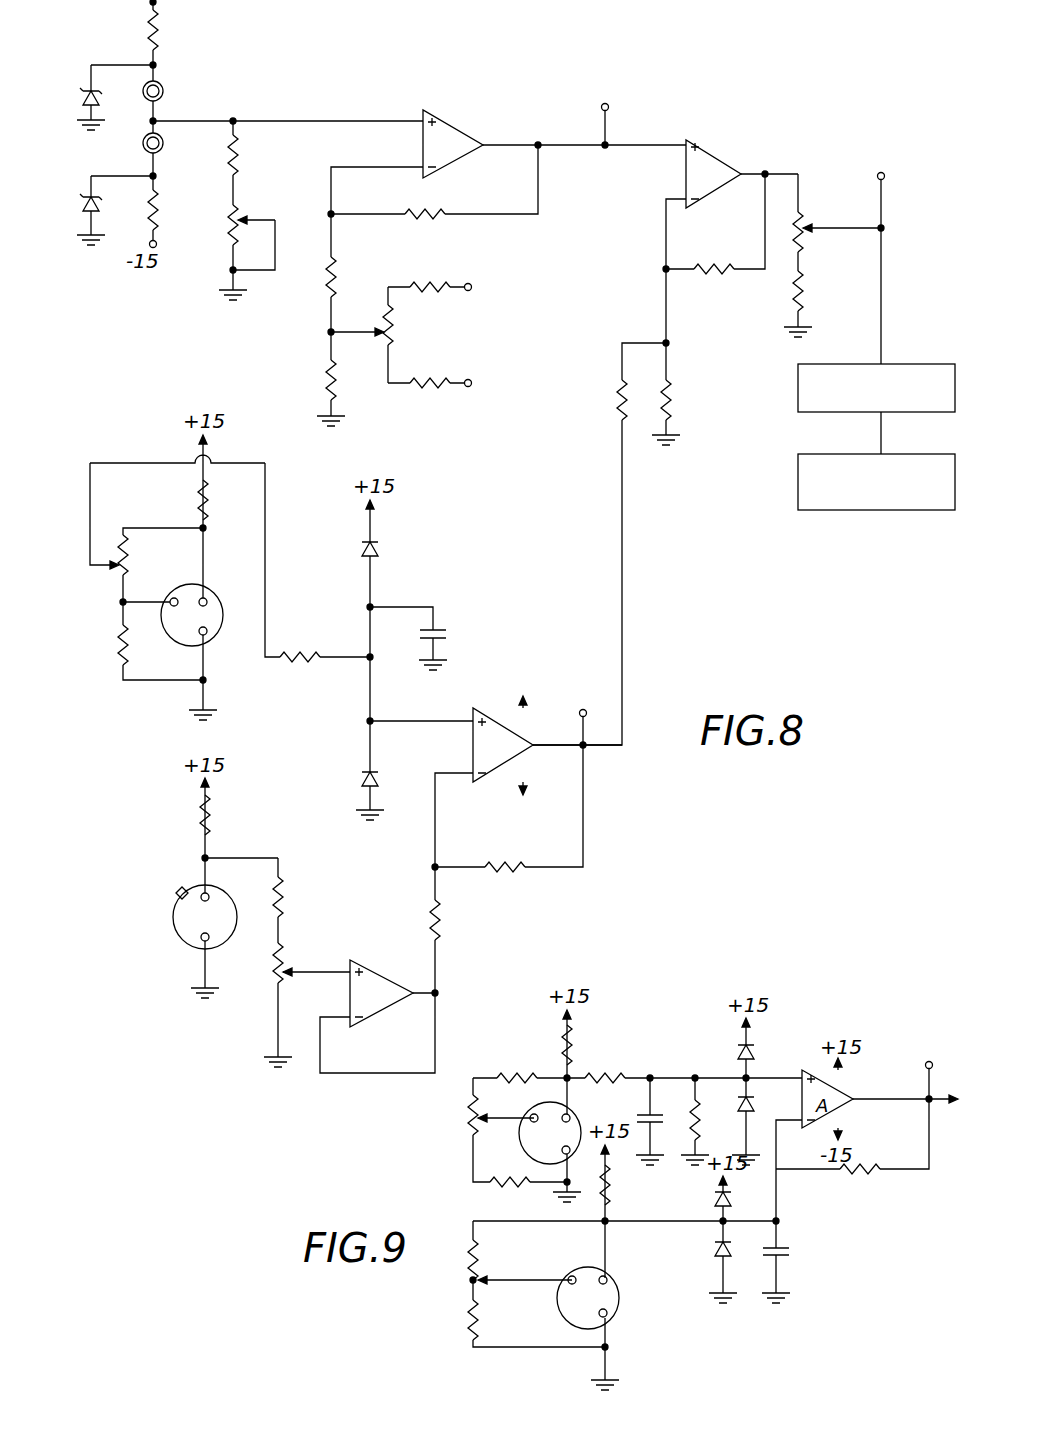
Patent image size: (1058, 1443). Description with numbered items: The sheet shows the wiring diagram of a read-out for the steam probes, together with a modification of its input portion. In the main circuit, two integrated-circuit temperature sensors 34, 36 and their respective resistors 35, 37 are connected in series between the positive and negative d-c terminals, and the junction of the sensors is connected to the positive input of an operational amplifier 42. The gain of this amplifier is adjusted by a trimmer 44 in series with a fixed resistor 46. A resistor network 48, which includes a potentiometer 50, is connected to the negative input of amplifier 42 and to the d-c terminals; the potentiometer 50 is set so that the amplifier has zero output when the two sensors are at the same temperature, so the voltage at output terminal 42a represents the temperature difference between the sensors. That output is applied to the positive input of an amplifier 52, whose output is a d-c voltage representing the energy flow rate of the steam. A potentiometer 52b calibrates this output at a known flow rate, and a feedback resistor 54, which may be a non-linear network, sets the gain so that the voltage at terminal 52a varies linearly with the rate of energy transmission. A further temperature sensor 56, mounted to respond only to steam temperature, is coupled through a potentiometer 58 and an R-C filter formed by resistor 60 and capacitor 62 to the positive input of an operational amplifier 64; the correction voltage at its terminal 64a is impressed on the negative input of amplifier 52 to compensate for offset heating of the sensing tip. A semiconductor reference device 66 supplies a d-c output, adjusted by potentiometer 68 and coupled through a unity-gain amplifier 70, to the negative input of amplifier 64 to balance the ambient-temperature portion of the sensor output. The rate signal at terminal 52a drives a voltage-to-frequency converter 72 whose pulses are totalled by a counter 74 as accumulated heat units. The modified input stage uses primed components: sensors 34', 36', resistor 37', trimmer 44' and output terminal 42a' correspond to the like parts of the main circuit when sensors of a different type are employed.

In FIG. 8, the resistor 35 is at (158, 30).
In FIG. 9, the resistor 35 is at (514, 1074).
In FIG. 8, the temperature sensor 34 is at (173, 92).
In FIG. 8, the temperature sensor 36 is at (173, 144).
In FIG. 8, the resistor 37 is at (174, 210).
In FIG. 8, the fixed resistor 46 is at (240, 155).
In FIG. 8, the trimmer 44 is at (228, 252).
In FIG. 8, the operational amplifier 42 is at (447, 126).
In FIG. 8, the output terminal 42a is at (603, 108).
In FIG. 8, the resistor network 48 is at (316, 330).
In FIG. 8, the potentiometer 50 is at (398, 342).
In FIG. 8, the amplifier 52 is at (716, 152).
In FIG. 8, the output terminal 52a is at (890, 160).
In FIG. 8, the potentiometer 52b is at (808, 213).
In FIG. 8, the feedback resistor 54 is at (710, 280).
In FIG. 8, the voltage-to-frequency converter 72 is at (864, 362).
In FIG. 8, the counter 74 is at (846, 452).
In FIG. 8, the potentiometer 58 is at (132, 568).
In FIG. 8, the temperature sensor 56 is at (215, 633).
In FIG. 8, the R-C filter resistor 60 is at (312, 652).
In FIG. 8, the R-C filter capacitor 62 is at (448, 634).
In FIG. 8, the operational amplifier 64 is at (537, 740).
In FIG. 8, the output terminal 64a is at (593, 698).
In FIG. 8, the semiconductor device 66 is at (175, 931).
In FIG. 8, the potentiometer 68 is at (272, 986).
In FIG. 8, the amplifier 70 is at (395, 965).
In FIG. 9, the trimmer 44' is at (445, 1120).
In FIG. 9, the temperature sensor 34' is at (571, 1126).
In FIG. 9, the resistor 37' is at (631, 1191).
In FIG. 9, the temperature sensor 36' is at (613, 1298).
In FIG. 9, the output terminal 42a' is at (917, 1050).